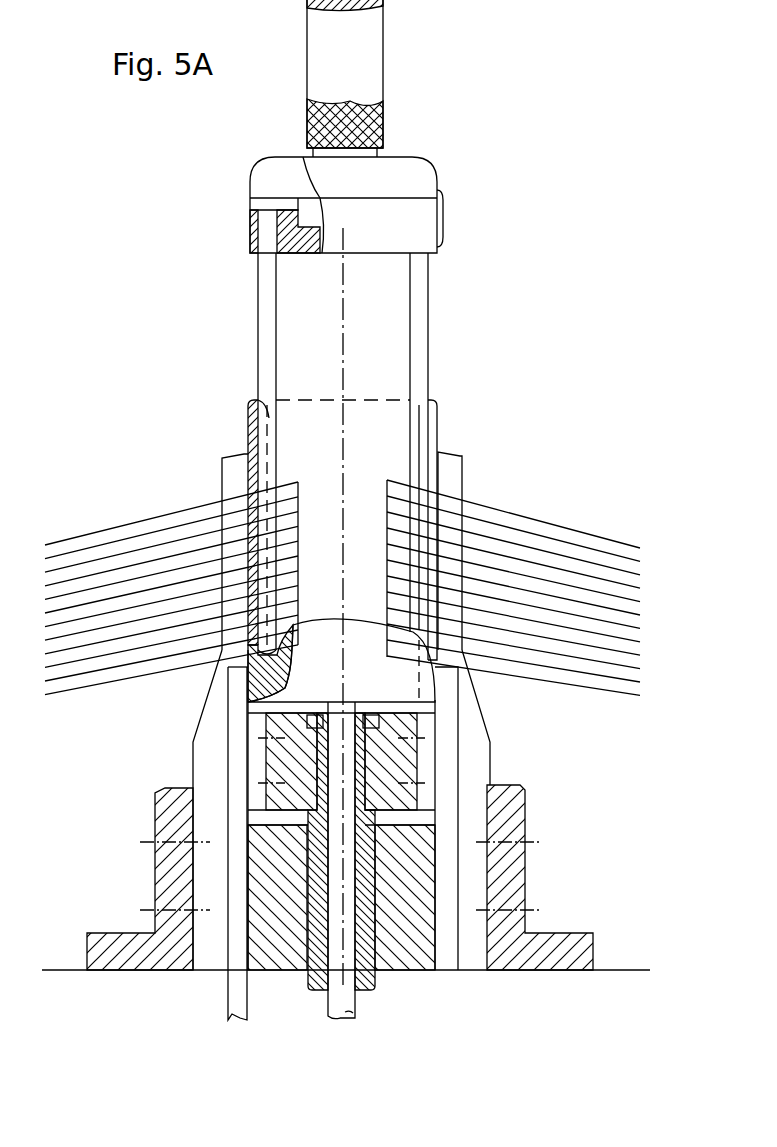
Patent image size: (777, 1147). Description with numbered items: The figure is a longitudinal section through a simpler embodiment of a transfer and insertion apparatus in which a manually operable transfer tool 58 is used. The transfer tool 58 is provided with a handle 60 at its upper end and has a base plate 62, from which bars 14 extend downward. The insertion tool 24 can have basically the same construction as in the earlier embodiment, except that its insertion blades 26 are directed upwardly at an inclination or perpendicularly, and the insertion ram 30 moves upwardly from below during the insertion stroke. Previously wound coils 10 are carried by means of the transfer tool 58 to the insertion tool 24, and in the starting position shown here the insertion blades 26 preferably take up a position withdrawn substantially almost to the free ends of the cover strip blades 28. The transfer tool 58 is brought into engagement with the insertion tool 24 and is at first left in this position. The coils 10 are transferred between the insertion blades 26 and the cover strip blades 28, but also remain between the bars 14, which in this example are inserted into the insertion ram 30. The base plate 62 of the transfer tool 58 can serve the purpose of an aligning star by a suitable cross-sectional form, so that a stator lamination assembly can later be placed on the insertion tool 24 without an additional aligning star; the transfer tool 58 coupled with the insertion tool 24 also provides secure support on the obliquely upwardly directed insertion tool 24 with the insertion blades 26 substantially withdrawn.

The coils 10 is at (525, 525).
The bars 14 is at (420, 289).
The insertion tool 24 is at (248, 408).
The insertion blades 26 is at (428, 418).
The cover strip blades 28 is at (450, 477).
The insertion ram 30 is at (373, 653).
The transfer tool 58 is at (248, 220).
The handle 60 is at (365, 95).
The base plate 62 is at (418, 232).